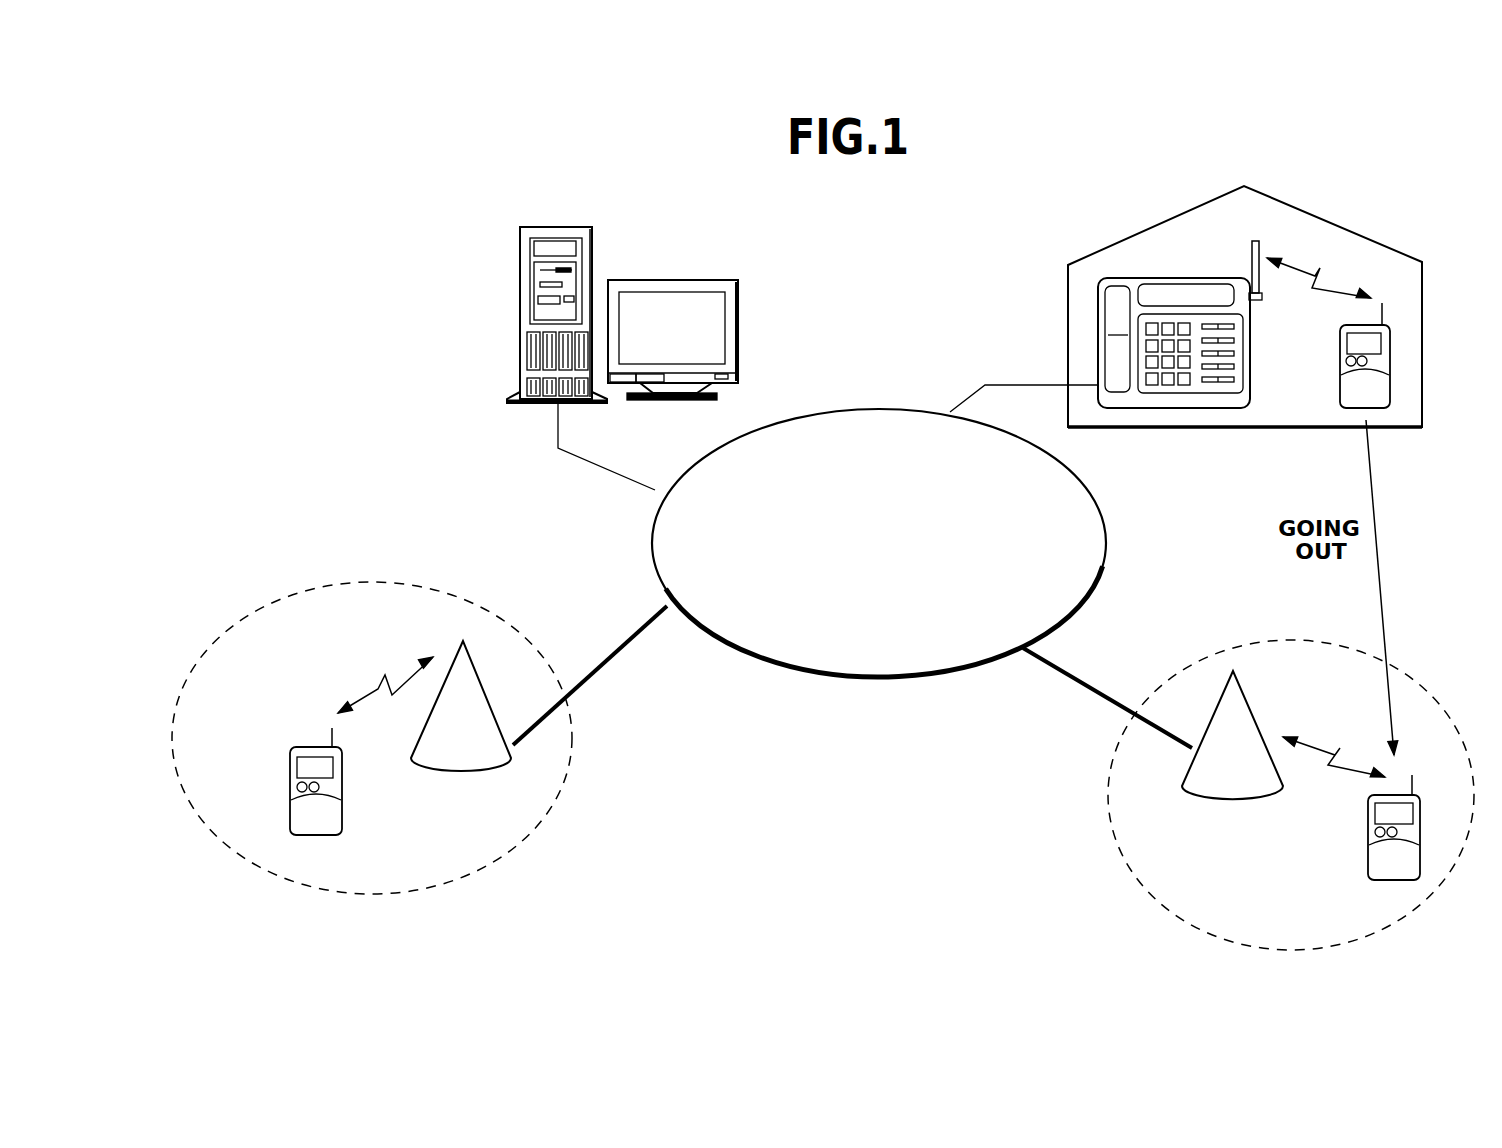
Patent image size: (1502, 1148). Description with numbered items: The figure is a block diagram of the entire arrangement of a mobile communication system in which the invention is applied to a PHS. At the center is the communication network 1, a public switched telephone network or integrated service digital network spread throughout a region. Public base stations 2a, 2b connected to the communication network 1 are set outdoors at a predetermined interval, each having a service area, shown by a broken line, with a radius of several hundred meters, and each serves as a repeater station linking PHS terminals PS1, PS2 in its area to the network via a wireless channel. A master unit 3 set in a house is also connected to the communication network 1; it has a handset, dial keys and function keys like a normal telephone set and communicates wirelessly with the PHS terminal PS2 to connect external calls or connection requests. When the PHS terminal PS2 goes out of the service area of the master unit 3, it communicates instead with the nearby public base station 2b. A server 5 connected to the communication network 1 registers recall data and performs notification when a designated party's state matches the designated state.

The communication network 1 is at (877, 408).
The public base station 2a is at (458, 648).
The public base station 2b is at (1252, 705).
The master unit 3 is at (1226, 278).
The server 5 is at (594, 263).
The PHS terminal PS1 is at (342, 815).
The PHS terminal PS2 is at (1339, 390).